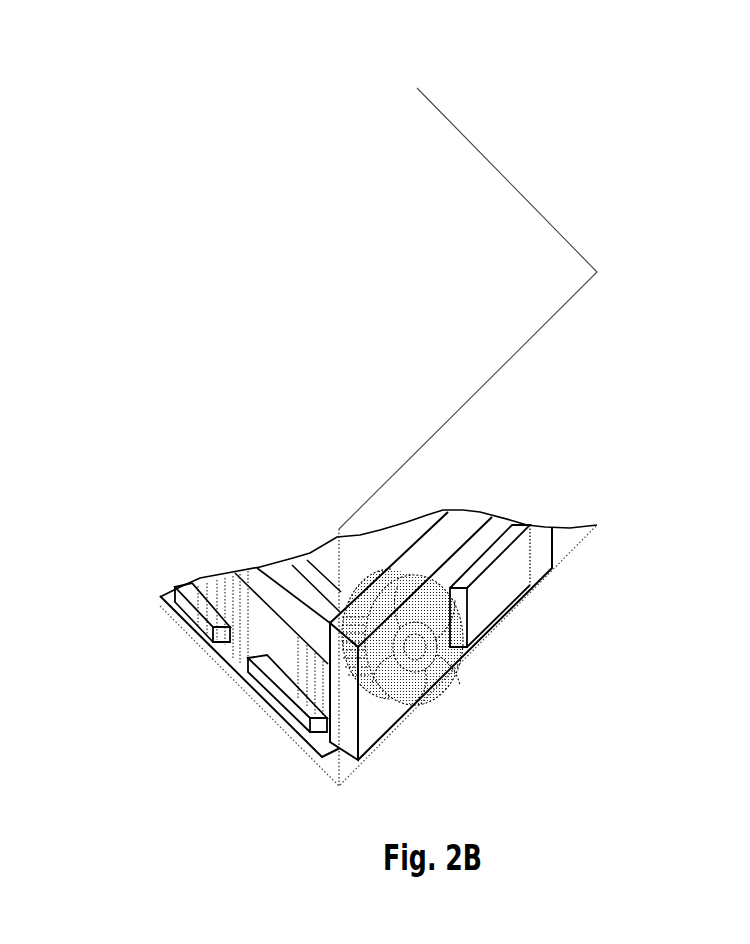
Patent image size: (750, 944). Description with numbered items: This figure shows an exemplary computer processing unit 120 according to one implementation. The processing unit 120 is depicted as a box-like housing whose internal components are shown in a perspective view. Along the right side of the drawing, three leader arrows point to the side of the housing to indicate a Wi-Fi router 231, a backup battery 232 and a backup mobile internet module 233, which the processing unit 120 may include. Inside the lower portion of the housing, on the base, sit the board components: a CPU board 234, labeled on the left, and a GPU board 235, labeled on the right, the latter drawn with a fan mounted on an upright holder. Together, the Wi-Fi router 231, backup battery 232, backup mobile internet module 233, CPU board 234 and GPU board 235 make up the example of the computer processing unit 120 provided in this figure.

The computer processing unit 120 is at (274, 90).
The Wi-Fi router 231 is at (609, 211).
The backup battery 232 is at (609, 260).
The backup mobile internet module 233 is at (609, 309).
The CPU board 234 is at (235, 678).
The GPU board 235 is at (480, 652).